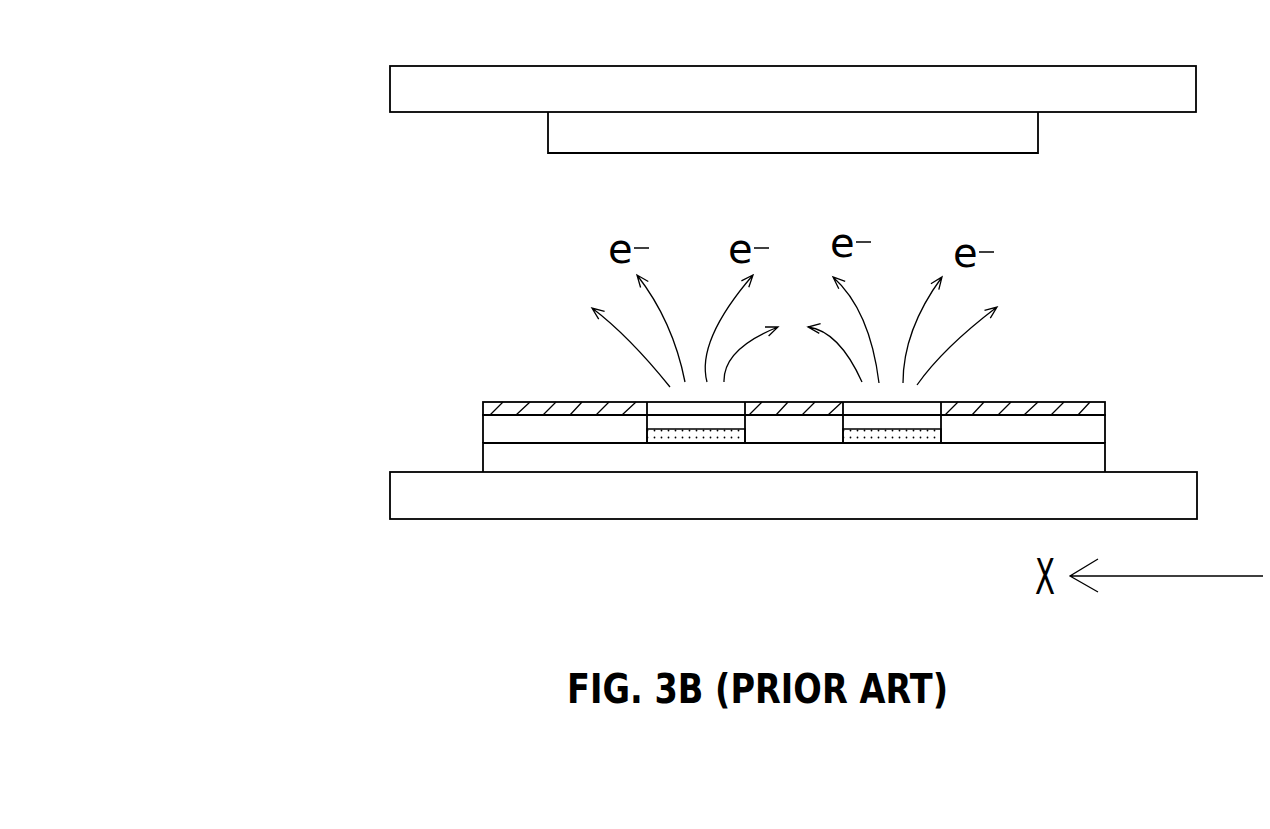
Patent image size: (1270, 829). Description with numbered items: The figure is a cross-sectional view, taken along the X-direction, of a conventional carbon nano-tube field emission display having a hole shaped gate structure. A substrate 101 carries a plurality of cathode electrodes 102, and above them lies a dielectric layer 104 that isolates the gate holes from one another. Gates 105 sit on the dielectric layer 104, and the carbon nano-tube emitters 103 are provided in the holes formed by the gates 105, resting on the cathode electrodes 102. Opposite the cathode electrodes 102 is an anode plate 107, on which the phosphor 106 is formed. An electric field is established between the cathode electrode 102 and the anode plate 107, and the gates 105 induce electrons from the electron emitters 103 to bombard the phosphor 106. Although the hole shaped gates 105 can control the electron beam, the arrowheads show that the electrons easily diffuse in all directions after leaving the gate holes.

The substrate 101 is at (422, 500).
The cathode electrode 102 is at (505, 457).
The carbon nano-tube emitter 103 is at (674, 436).
The dielectric layer 104 is at (503, 430).
The gate 105 is at (572, 400).
The phosphor 106 is at (580, 135).
The anode plate 107 is at (432, 84).